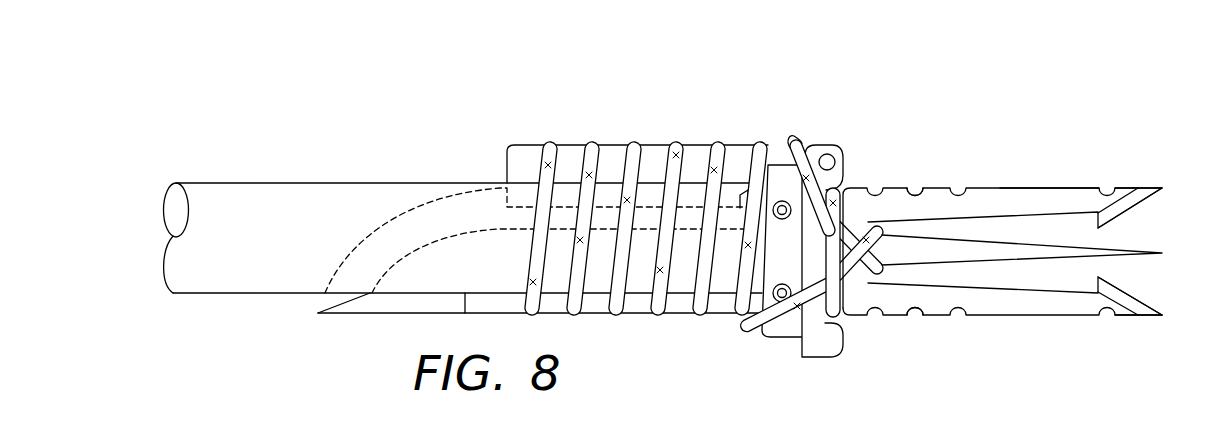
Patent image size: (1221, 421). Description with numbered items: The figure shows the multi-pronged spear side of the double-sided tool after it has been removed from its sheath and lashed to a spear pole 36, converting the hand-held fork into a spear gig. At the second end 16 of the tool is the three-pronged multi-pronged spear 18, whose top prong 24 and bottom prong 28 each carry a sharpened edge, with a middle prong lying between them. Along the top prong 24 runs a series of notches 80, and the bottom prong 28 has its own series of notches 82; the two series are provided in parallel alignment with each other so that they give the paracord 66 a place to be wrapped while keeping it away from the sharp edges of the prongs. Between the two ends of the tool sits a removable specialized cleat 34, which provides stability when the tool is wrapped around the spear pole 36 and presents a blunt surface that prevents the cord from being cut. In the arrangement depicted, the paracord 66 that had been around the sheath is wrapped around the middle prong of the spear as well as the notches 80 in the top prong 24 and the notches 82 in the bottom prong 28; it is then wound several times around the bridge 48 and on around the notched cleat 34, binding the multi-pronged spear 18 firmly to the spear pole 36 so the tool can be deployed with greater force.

The second end 16 is at (1162, 181).
The multi-pronged spear 18 is at (994, 192).
The top prong 24 is at (1063, 313).
The bottom prong 28 is at (1064, 195).
The cleat 34 is at (655, 146).
The spear pole 36 is at (235, 191).
The bridge 48 is at (790, 168).
The paracord 66 is at (588, 143).
The notches in the top prong 80 is at (916, 312).
The notches in the bottom prong 82 is at (916, 190).